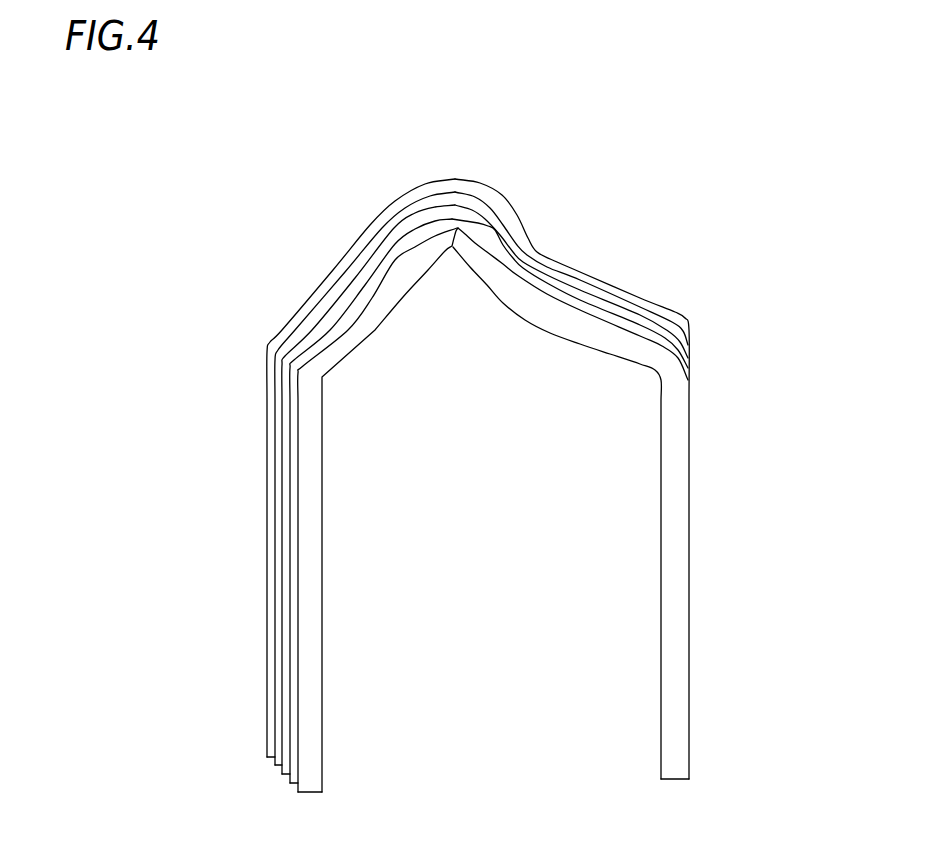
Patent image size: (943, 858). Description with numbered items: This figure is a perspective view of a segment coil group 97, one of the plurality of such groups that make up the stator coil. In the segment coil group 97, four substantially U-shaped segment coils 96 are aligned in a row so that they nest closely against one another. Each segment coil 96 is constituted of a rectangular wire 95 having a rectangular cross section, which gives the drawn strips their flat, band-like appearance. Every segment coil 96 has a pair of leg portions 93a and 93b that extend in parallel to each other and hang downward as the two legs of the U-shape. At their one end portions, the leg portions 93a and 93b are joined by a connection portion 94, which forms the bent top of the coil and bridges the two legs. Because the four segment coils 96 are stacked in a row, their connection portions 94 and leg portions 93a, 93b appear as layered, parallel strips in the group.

The leg portion 93a is at (682, 463).
The leg portion 93b is at (320, 471).
The connection portion 94 is at (453, 178).
The rectangular wire 95 is at (320, 697).
The segment coil 96 is at (388, 258).
The segment coil group 97 is at (650, 222).